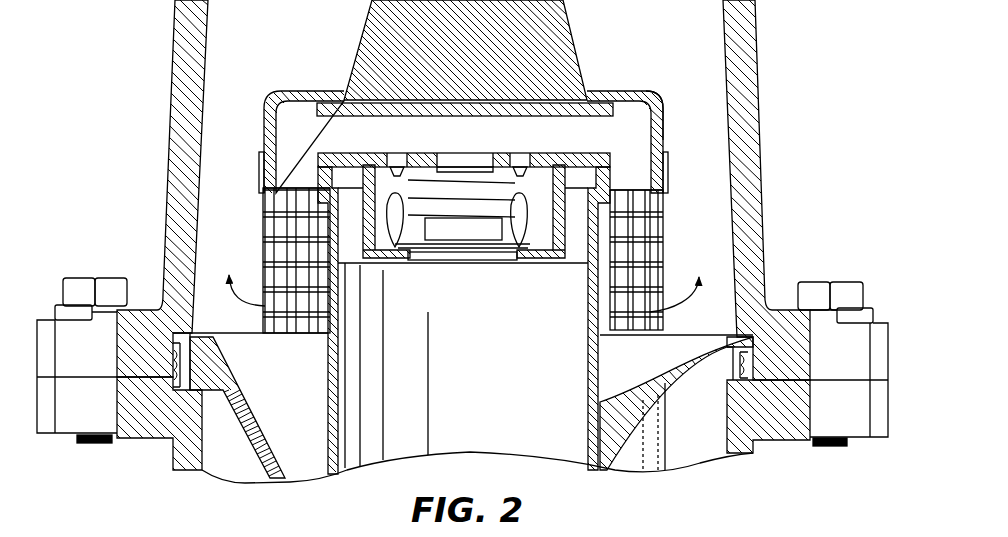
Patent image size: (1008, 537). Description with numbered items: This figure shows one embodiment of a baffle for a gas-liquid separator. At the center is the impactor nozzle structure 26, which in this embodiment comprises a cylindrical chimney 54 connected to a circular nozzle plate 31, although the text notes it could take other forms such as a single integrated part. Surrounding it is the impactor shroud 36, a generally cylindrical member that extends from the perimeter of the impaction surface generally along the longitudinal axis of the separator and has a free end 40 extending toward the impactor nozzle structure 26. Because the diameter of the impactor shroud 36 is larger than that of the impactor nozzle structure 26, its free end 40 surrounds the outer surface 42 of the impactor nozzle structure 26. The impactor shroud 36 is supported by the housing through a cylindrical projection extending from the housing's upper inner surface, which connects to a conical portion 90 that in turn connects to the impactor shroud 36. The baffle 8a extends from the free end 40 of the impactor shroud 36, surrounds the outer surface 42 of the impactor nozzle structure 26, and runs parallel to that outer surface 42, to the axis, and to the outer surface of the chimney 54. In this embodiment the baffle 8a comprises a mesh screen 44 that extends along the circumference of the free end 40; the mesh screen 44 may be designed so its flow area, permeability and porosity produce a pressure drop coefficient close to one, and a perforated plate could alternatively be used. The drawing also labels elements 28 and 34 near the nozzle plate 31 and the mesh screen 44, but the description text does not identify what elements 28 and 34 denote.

The baffle 8a is at (692, 222).
The impactor nozzle structure 26 is at (303, 435).
The terminal pins 28 is at (398, 156).
The circular nozzle plate 31 is at (333, 152).
The filter mesh 34 is at (459, 254).
The impactor shroud 36 is at (665, 128).
The free end 40 is at (265, 185).
The outer surface 42 is at (327, 362).
The mesh screen 44 is at (293, 240).
The cylindrical chimney 54 is at (587, 400).
The conical portion 90 is at (572, 36).